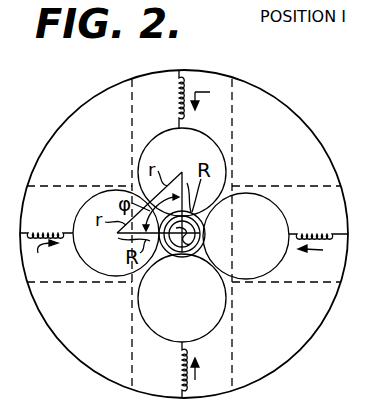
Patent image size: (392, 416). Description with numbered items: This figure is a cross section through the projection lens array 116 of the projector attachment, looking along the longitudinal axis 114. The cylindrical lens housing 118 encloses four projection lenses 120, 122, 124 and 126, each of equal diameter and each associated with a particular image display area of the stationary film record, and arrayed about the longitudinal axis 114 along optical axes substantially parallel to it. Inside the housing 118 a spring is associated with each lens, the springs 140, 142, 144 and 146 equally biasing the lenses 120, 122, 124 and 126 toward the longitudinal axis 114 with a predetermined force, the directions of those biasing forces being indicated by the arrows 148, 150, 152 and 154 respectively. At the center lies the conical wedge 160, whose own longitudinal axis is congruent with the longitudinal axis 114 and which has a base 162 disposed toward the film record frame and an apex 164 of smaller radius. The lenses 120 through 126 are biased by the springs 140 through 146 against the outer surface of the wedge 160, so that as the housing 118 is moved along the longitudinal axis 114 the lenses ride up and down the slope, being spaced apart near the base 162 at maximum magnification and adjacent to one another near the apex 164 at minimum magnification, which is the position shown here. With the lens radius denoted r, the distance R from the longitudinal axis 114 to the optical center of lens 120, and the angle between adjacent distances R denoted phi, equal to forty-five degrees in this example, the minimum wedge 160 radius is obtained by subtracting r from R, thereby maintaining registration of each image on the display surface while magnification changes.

The longitudinal axis 114 is at (183, 258).
The projection lens array 116 is at (301, 118).
The cylindrical lens housing 118 is at (52, 134).
The projection lens 120 is at (217, 148).
The projection lens 122 is at (277, 259).
The projection lens 124 is at (220, 311).
The projection lens 126 is at (103, 276).
The spring 140 is at (176, 83).
The spring 142 is at (308, 231).
The spring 144 is at (176, 378).
The spring 146 is at (54, 229).
The arrow 148 is at (210, 92).
The arrow 150 is at (323, 250).
The arrow 152 is at (200, 378).
The arrow 154 is at (51, 257).
The conical wedge 160 is at (203, 215).
The base 162 is at (206, 228).
The apex 164 is at (205, 248).